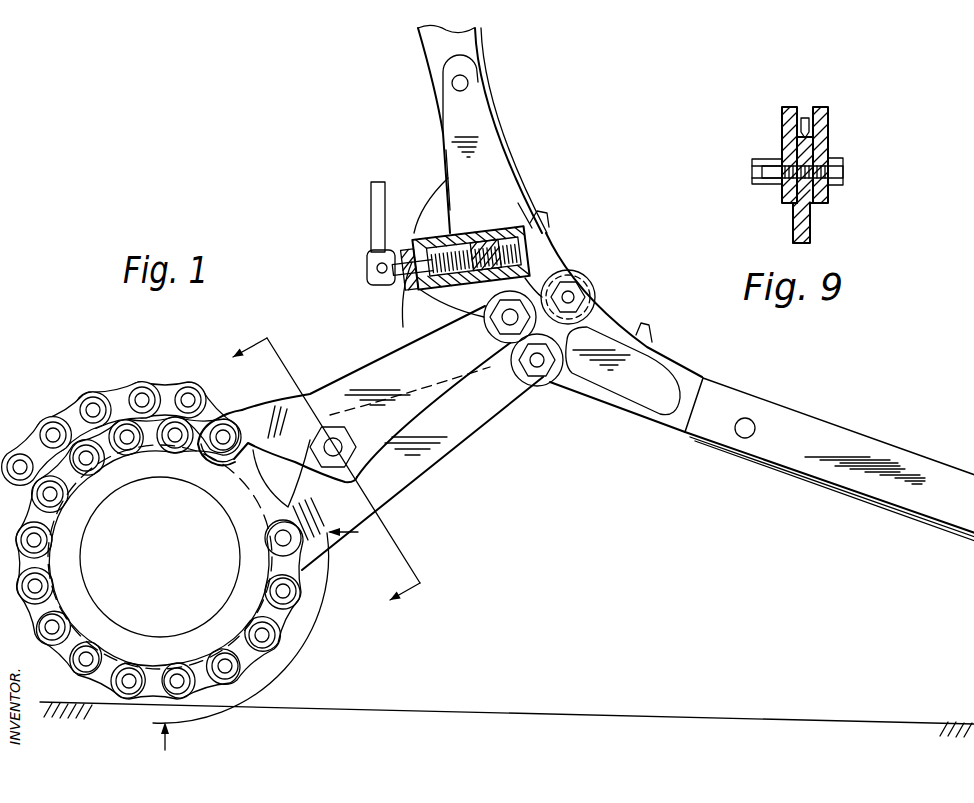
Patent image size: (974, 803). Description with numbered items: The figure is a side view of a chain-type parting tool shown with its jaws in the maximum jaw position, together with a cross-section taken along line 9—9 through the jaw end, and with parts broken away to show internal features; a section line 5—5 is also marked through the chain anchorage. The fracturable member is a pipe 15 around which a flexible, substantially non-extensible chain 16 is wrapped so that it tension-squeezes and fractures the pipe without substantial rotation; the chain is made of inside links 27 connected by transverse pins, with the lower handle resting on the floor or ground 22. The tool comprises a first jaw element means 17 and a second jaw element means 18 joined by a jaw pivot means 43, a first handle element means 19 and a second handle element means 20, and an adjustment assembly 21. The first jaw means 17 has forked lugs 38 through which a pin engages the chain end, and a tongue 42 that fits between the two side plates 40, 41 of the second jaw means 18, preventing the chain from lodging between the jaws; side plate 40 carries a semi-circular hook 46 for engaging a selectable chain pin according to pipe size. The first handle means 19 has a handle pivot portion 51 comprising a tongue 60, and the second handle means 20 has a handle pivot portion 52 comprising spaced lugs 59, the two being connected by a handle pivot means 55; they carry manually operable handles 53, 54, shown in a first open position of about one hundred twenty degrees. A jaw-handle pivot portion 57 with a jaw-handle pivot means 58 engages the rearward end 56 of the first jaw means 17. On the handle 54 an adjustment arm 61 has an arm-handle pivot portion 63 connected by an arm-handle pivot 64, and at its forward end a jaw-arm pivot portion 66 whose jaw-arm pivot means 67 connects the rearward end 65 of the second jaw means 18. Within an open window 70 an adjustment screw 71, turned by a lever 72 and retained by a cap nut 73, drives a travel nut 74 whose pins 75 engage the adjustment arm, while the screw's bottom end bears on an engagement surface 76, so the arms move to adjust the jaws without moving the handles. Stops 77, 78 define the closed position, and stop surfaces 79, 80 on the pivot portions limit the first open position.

In FIG. 1, the section line 5- 5 is at (265, 649).
In FIG. 1, the section line 9- 9 is at (314, 476).
In FIG. 1, the pipe 15 is at (75, 556).
In FIG. 1, the chain 16 is at (174, 540).
In FIG. 1, the first jaw element means 17 is at (430, 486).
In FIG. 9, the first jaw element means 17 is at (812, 232).
In FIG. 1, the second jaw element means 18 is at (362, 394).
In FIG. 9, the second jaw element means 18 is at (818, 107).
In FIG. 1, the first handle element means 19 is at (624, 352).
In FIG. 1, the second handle element means 20 is at (437, 108).
In FIG. 1, the adjustment assembly 21 is at (395, 320).
In FIG. 1, the floor or ground line 22 is at (506, 712).
In FIG. 1, the inside links 27 is at (88, 658).
In FIG. 1, the forked lug 38 is at (301, 549).
In FIG. 1, the side plate 40 is at (253, 412).
In FIG. 9, the side plate 40 is at (782, 120).
In FIG. 9, the side plate 41 is at (828, 138).
In FIG. 1, the tongue 42 is at (258, 478).
In FIG. 9, the tongue 42 is at (812, 124).
In FIG. 1, the jaw pivot means 43 is at (345, 452).
In FIG. 9, the jaw pivot means 43 is at (755, 172).
In FIG. 1, the semi-circular hook 46 is at (228, 441).
In FIG. 1, the handle pivot portion 51 is at (602, 318).
In FIG. 1, the handle pivot portion 52 is at (526, 262).
In FIG. 1, the manually operable handle 53 is at (868, 433).
In FIG. 1, the manually operable handle 54 is at (484, 52).
In FIG. 1, the handle pivot means 55 is at (575, 295).
In FIG. 1, the rearward end of first jaw means 56 is at (531, 384).
In FIG. 1, the jaw-handle pivot portion 57 is at (521, 390).
In FIG. 1, the jaw-handle pivot means 58 is at (539, 380).
In FIG. 1, the spaced lugs 59 is at (574, 300).
In FIG. 1, the tongue 60 is at (590, 286).
In FIG. 1, the adjustment arm 61 is at (445, 147).
In FIG. 1, the arm-handle pivot portion 63 is at (492, 106).
In FIG. 1, the arm-handle pivot 64 is at (468, 84).
In FIG. 1, the rearward end of second jaw means 65 is at (460, 312).
In FIG. 1, the jaw-arm pivot portion 66 is at (478, 372).
In FIG. 1, the jaw-arm pivot means 67 is at (488, 327).
In FIG. 1, the open window 70 is at (456, 231).
In FIG. 1, the adjustment screw 71 is at (469, 240).
In FIG. 1, the lever 72 is at (385, 206).
In FIG. 1, the cap nut 73 is at (400, 286).
In FIG. 1, the travel nut 74 is at (560, 277).
In FIG. 1, the pins 75 is at (522, 215).
In FIG. 1, the engagement surface 76 is at (522, 238).
In FIG. 1, the stop 77 is at (650, 329).
In FIG. 1, the stop 78 is at (549, 219).
In FIG. 1, the stop surface 79 is at (520, 373).
In FIG. 1, the stop surface 80 is at (494, 334).